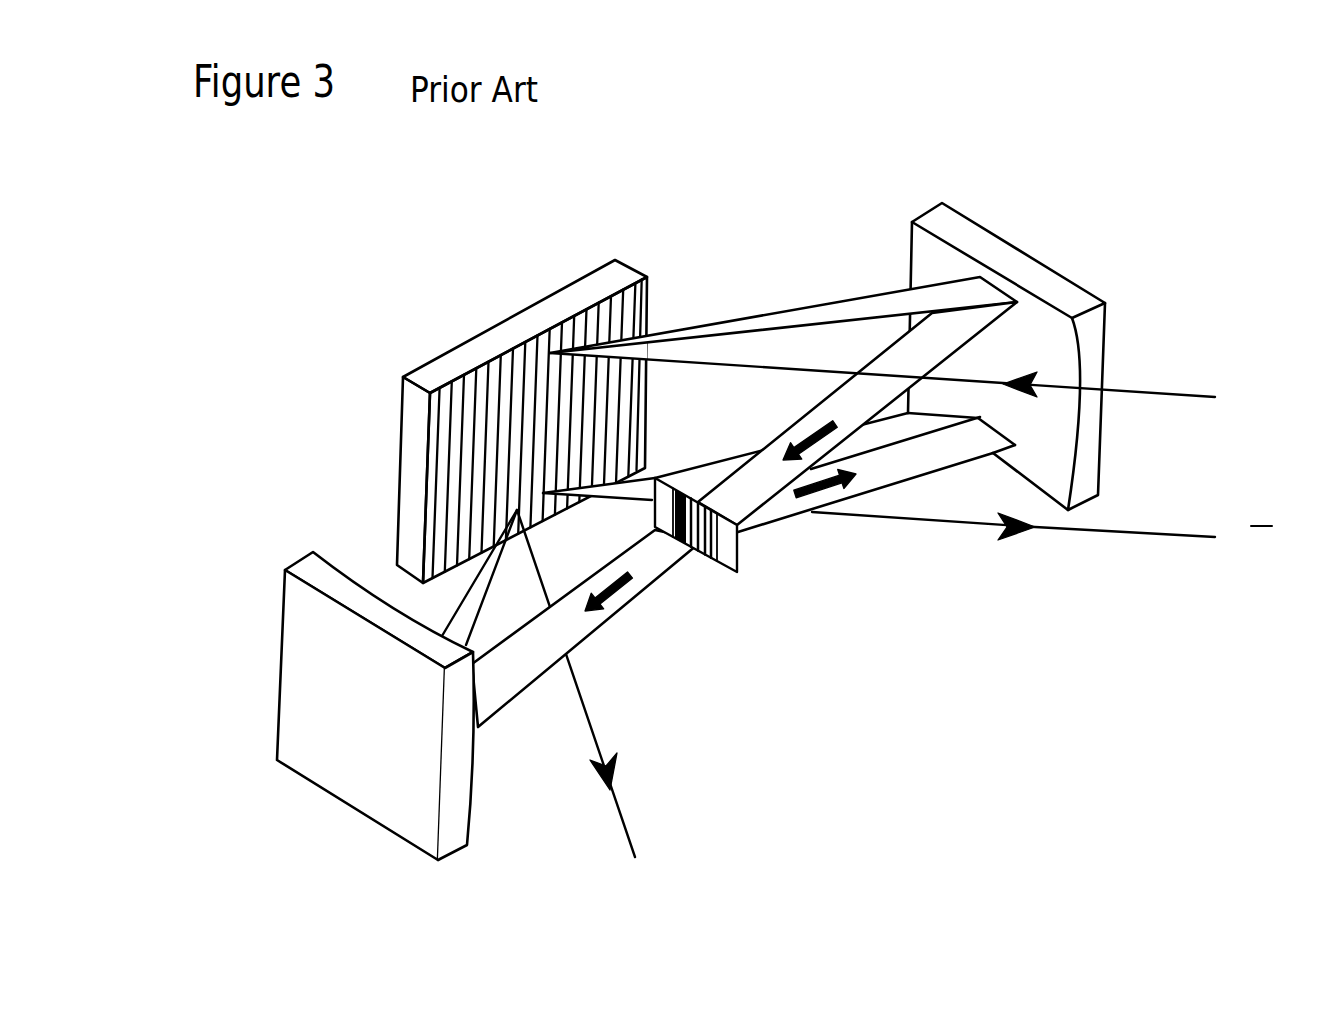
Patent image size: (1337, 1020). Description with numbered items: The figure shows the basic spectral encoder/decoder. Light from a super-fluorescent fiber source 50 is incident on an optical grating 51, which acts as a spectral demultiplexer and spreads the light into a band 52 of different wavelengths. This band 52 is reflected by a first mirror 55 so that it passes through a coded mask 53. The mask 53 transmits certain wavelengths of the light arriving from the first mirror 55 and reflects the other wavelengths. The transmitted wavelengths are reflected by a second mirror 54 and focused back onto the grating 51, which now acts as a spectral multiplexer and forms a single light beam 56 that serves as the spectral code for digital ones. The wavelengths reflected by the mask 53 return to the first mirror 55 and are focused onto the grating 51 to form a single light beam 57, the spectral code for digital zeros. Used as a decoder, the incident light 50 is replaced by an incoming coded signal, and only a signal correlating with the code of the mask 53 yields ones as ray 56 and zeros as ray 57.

The super-fluorescent fiber source of light 50 is at (924, 376).
The optical grating 51 is at (493, 318).
The band of light 52 is at (790, 305).
The coded mask 53 is at (738, 565).
The second mirror 54 is at (383, 825).
The first mirror 55 is at (1033, 250).
The light beam for digital 1's 56 is at (624, 705).
The light beam for digital 0's 57 is at (1042, 560).